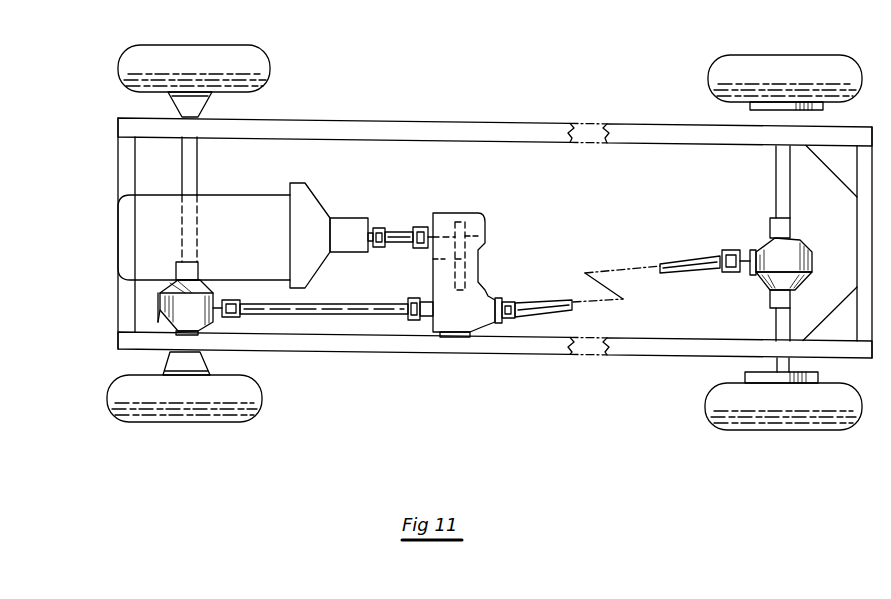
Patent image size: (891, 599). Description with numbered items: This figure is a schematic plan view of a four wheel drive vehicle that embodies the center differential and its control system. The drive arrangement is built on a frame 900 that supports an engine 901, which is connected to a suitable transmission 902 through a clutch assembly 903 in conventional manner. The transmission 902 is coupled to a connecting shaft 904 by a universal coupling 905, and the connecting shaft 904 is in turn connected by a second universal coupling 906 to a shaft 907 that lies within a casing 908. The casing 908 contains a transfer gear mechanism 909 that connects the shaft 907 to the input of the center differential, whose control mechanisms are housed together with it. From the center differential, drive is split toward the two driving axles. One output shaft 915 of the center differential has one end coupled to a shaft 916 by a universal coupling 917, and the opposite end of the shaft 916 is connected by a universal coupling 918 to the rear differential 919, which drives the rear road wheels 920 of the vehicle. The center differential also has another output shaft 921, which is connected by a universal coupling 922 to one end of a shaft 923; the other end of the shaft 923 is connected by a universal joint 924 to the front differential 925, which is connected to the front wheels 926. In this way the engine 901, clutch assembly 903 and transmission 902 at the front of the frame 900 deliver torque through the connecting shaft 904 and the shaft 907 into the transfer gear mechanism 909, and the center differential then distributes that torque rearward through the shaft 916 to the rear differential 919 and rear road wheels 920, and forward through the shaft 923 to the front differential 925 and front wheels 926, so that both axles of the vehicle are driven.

The frame 900 is at (478, 129).
The engine 901 is at (245, 219).
The transmission 902 is at (346, 219).
The clutch assembly 903 is at (321, 236).
The connecting shaft 904 is at (400, 232).
The universal coupling 905 is at (378, 228).
The universal coupling 906 is at (420, 228).
The shaft 907 is at (433, 259).
The casing 908 is at (463, 218).
The transfer gear mechanism 909 is at (498, 221).
The output shaft 915 is at (498, 298).
The shaft 916 is at (548, 305).
The universal coupling 917 is at (510, 300).
The universal coupling 918 is at (728, 275).
The rear differential 919 is at (800, 243).
The rear road wheels 920 is at (751, 66).
The output shaft 921 is at (432, 304).
The universal coupling 922 is at (412, 318).
The shaft 923 is at (338, 306).
The universal joint 924 is at (232, 298).
The front differential 925 is at (204, 286).
The front wheels 926 is at (234, 58).